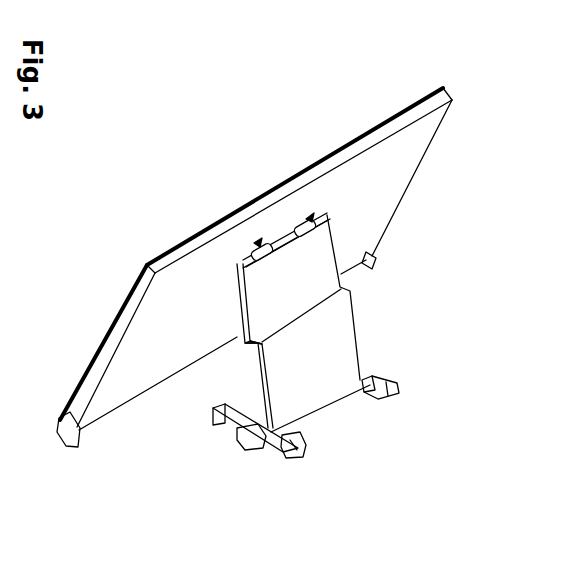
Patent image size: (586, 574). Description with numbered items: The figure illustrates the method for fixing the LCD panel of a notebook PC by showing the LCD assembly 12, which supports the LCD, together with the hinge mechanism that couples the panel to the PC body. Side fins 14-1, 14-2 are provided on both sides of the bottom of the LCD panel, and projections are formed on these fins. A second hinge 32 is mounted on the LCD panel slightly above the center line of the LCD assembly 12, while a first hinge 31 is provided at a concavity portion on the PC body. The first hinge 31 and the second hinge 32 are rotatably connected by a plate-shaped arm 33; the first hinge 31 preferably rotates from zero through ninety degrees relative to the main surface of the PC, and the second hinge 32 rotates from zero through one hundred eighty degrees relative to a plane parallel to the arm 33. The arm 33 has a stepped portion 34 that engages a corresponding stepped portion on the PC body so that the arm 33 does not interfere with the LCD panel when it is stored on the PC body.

The LCD assembly 12 is at (393, 162).
The side fin 14-1 is at (380, 257).
The side fin 14-2 is at (79, 437).
The first hinge 31 is at (360, 392).
The second hinge 32 is at (244, 252).
The plate-shaped arm 33 is at (337, 343).
The stepped portion 34 is at (248, 347).